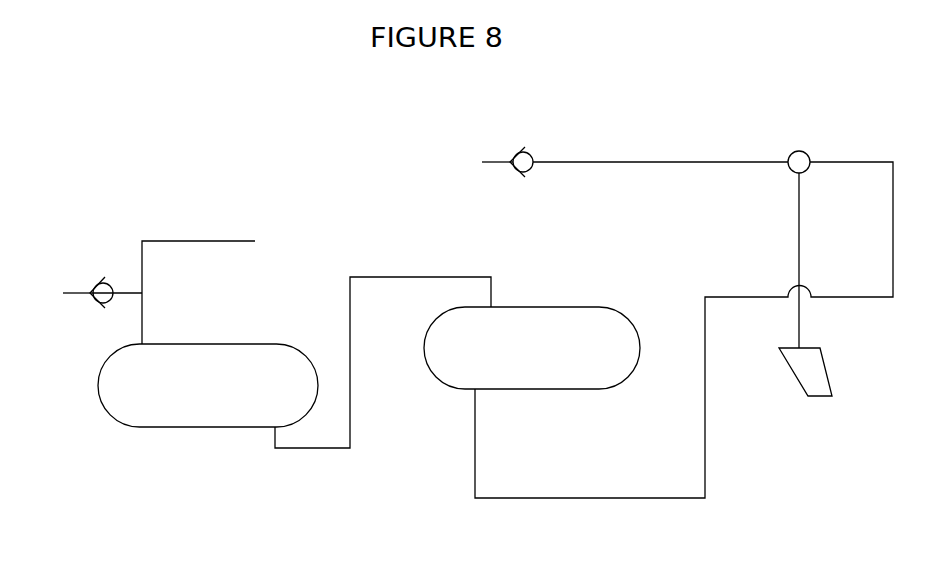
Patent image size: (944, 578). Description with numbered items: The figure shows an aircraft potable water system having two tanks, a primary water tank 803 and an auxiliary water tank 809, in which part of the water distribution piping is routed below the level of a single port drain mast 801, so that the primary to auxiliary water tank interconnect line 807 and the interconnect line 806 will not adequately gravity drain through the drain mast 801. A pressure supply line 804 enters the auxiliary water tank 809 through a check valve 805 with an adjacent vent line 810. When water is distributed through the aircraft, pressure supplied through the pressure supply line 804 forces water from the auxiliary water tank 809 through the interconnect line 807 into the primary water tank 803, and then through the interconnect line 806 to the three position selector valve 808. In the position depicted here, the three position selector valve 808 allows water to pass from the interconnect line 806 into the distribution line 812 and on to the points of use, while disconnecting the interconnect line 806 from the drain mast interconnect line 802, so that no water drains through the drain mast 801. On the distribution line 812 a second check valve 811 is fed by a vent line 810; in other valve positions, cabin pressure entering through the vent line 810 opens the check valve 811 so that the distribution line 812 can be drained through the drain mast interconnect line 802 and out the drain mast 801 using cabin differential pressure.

The drain mast 801 is at (826, 362).
The drain mast interconnect line 802 is at (799, 255).
The primary water tank 803 is at (538, 392).
The pressure supply line 804 is at (200, 239).
The check valve 805 is at (93, 282).
The interconnect line 806 is at (590, 498).
The primary to auxiliary water tank interconnect line 807 is at (313, 449).
The three position selector valve 808 is at (793, 172).
The auxiliary water tank 809 is at (208, 427).
The vent line 810 is at (75, 290).
The check valve 811 is at (515, 153).
The distribution line 812 is at (660, 163).